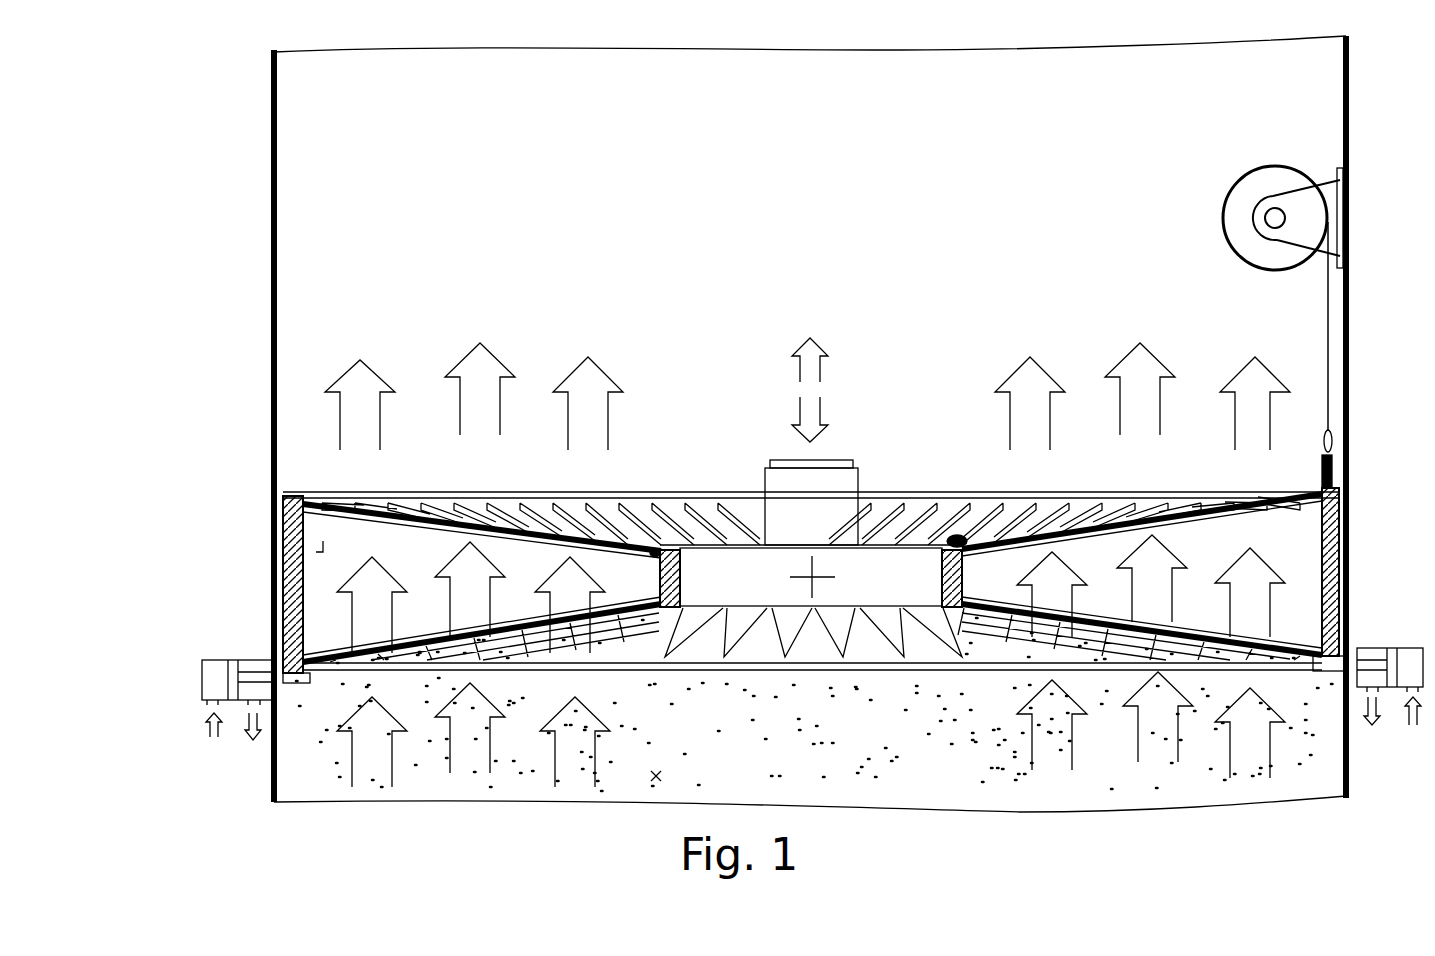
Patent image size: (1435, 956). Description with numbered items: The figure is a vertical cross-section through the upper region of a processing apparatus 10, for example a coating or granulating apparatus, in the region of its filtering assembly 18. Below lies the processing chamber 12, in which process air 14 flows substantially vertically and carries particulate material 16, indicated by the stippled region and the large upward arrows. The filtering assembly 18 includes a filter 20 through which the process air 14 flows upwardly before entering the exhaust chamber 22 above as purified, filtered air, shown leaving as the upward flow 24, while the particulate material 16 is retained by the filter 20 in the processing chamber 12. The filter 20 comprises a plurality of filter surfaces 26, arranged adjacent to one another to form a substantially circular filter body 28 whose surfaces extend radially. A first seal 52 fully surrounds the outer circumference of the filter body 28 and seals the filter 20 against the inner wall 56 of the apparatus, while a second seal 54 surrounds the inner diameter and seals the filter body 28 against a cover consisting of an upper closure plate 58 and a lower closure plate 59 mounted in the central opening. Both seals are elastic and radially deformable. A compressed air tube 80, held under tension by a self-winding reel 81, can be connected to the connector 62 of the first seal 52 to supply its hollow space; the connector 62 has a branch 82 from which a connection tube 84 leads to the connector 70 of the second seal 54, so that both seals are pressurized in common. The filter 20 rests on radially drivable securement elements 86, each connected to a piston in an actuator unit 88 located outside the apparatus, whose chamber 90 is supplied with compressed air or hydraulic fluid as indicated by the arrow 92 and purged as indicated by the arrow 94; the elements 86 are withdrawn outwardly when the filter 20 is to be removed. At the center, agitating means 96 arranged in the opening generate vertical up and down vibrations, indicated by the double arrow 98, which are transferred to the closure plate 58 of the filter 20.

The processing apparatus 10 is at (236, 222).
The processing chamber 12 is at (655, 778).
The process air 14 is at (1038, 762).
The particulate material 16 is at (852, 775).
The filtering assembly 18 is at (702, 467).
The filter 20 is at (562, 507).
The exhaust chamber 22 is at (942, 140).
The exhaust air flow 24 is at (1010, 411).
The filter surfaces 26 is at (320, 548).
The filter body 28 is at (436, 507).
The first seal 52 is at (292, 560).
The second seal 54 is at (660, 553).
The inner wall 56 is at (282, 490).
The upper closure plate 58 is at (888, 546).
The lower closure plate 59 is at (858, 640).
The connector 62 is at (1342, 498).
The connector 70 is at (960, 535).
The compressed air tube 80 is at (1330, 332).
The self-winding reel 81 is at (1282, 182).
The branch 82 is at (1320, 488).
The connection tube 84 is at (1060, 520).
The securement elements 86 is at (292, 686).
The blower unit 88 is at (216, 672).
The chamber 90 is at (203, 687).
The arrow 92 is at (208, 728).
The arrow 94 is at (248, 728).
The agitating means 96 is at (775, 466).
The double arrow 98 is at (812, 375).